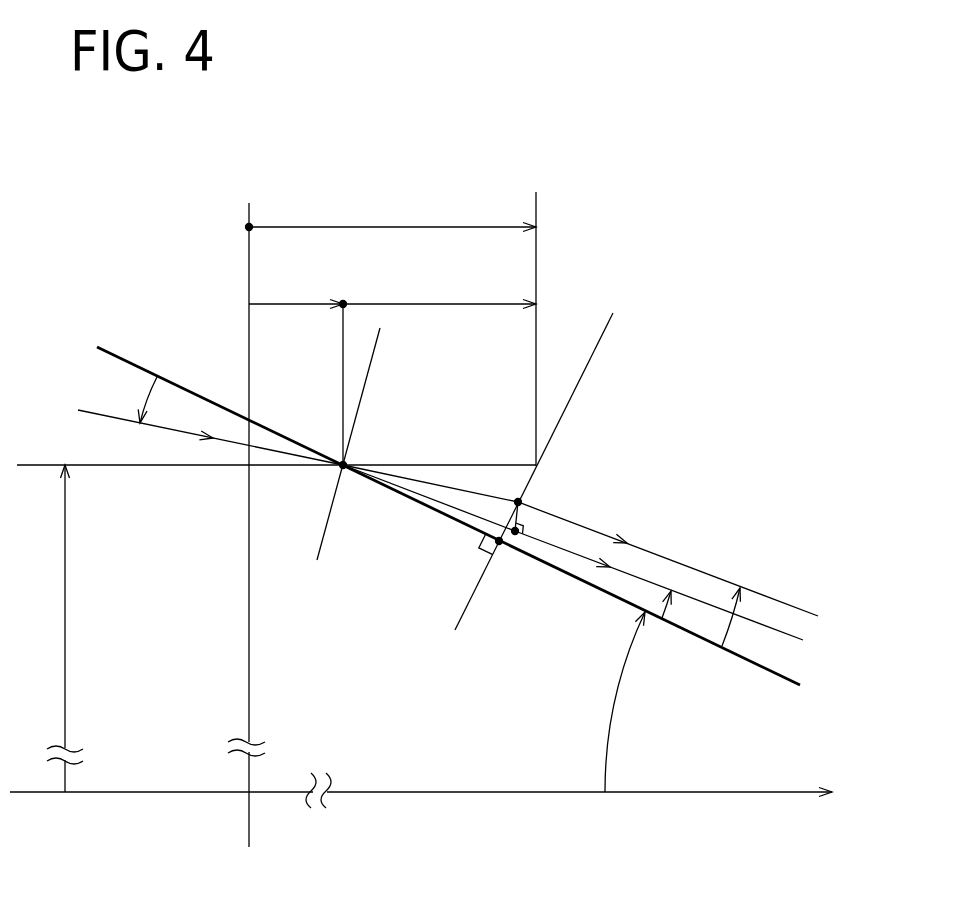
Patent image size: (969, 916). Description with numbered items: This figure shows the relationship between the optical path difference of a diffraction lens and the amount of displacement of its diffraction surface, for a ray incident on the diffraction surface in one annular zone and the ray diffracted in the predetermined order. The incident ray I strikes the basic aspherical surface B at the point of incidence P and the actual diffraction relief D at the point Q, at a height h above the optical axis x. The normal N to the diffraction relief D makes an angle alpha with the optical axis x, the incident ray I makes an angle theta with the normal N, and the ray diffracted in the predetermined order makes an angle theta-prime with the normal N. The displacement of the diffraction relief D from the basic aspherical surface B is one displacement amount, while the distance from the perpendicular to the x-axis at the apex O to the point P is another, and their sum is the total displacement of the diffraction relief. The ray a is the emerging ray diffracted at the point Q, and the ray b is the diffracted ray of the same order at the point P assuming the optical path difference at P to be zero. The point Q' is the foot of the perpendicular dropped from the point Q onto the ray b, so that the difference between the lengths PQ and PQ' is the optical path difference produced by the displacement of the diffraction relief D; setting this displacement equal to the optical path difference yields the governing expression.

The incident ray I is at (201, 429).
The basic aspherical surface B is at (364, 385).
The diffraction relief D is at (571, 397).
The point of incidence to the basic aspherical surface P is at (343, 465).
The point of incidence to the diffraction relief Q is at (553, 490).
The foot of the perpendicular to ray b from point Q Q' is at (511, 567).
The emerging ray diffracted at point Q a is at (797, 605).
The diffracted ray at point P b is at (796, 637).
The normal to the diffraction relief N is at (776, 676).
The height h is at (60, 628).
The apex O is at (237, 525).
The optical axis x is at (431, 792).